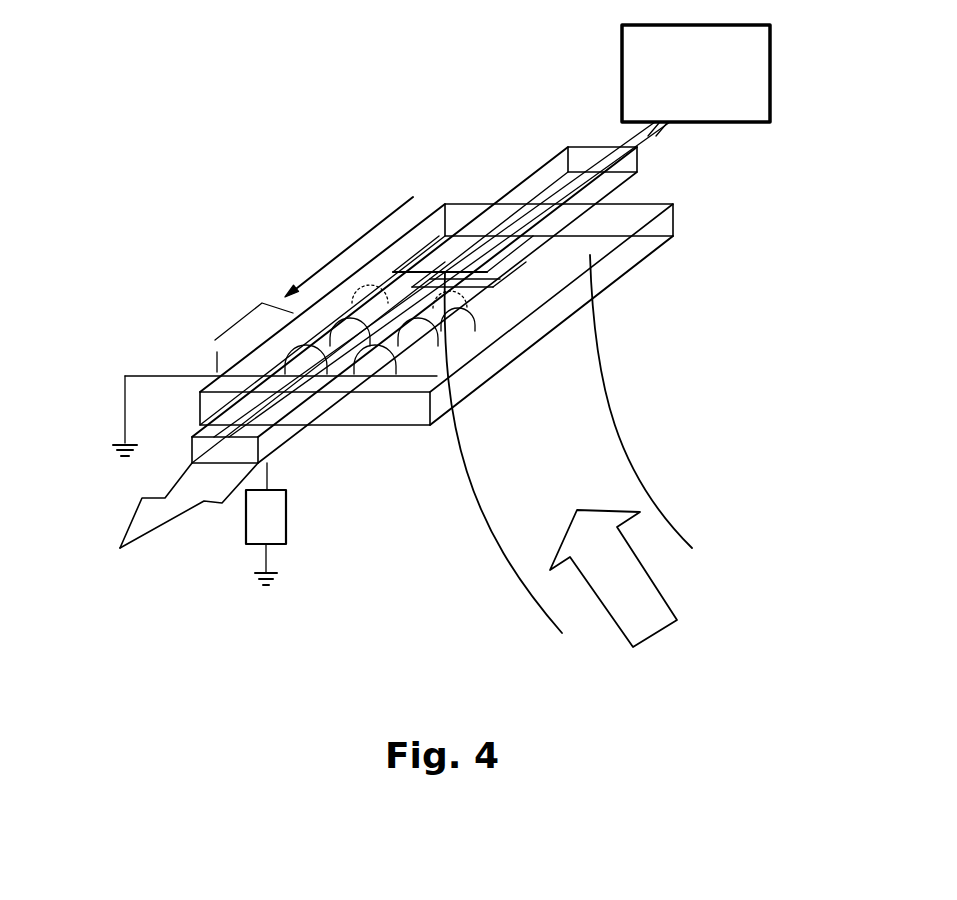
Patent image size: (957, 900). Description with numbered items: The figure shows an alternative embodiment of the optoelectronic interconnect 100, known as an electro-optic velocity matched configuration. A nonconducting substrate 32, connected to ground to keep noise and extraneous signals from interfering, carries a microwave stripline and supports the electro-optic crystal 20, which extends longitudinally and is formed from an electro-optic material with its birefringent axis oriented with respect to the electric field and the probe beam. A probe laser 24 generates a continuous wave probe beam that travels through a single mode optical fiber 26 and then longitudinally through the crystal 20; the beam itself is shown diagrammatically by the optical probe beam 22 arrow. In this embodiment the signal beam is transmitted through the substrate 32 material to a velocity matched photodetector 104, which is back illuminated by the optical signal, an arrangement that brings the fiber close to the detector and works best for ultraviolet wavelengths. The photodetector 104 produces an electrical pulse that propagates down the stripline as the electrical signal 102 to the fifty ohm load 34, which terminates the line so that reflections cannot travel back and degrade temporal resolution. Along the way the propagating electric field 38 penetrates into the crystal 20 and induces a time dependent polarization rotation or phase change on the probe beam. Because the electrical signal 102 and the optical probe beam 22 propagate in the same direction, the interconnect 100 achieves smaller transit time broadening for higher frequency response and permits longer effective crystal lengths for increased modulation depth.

The optoelectronic interconnect 100 is at (143, 239).
The electrical signal 102 is at (350, 245).
The velocity matched photodetector 104 is at (548, 263).
The electro-optic crystal 20 is at (543, 162).
The optical probe beam 22 is at (172, 487).
The probe laser 24 is at (770, 78).
The single mode optical fiber 26 is at (667, 130).
The nonconducting substrate 32 is at (643, 253).
The 50 ohm load 34 is at (287, 520).
The propagating electric field 38 is at (334, 326).